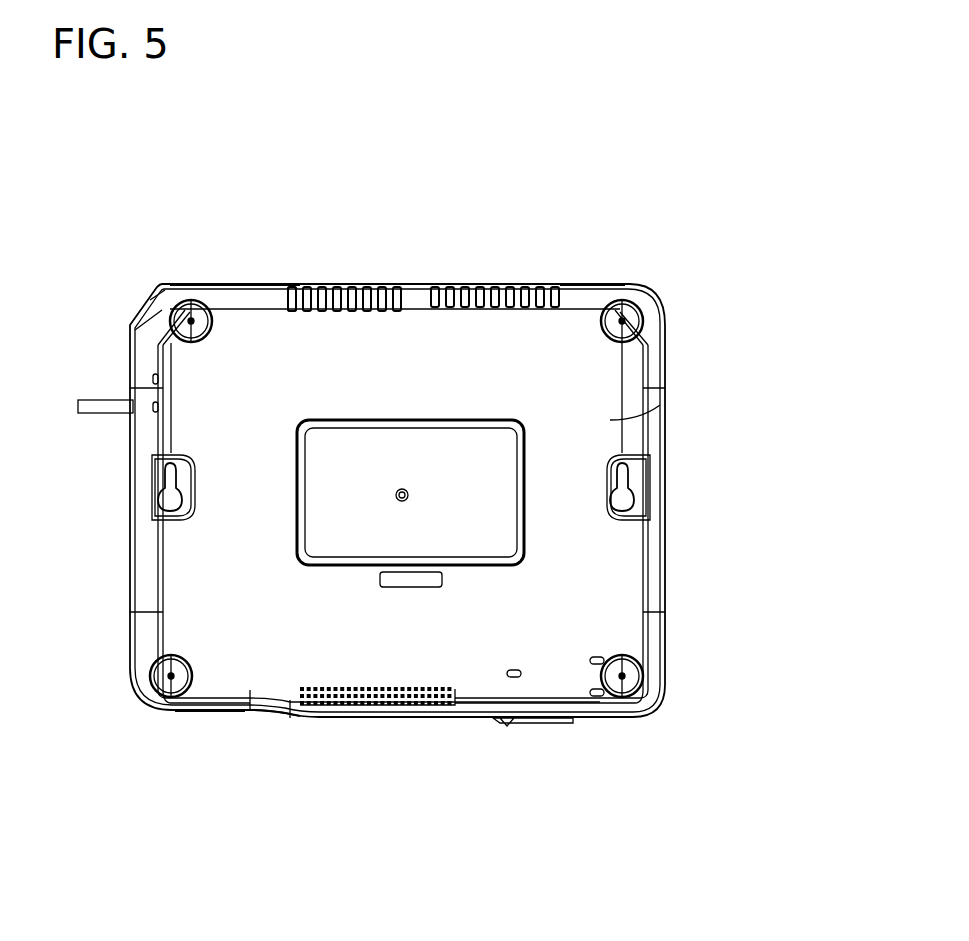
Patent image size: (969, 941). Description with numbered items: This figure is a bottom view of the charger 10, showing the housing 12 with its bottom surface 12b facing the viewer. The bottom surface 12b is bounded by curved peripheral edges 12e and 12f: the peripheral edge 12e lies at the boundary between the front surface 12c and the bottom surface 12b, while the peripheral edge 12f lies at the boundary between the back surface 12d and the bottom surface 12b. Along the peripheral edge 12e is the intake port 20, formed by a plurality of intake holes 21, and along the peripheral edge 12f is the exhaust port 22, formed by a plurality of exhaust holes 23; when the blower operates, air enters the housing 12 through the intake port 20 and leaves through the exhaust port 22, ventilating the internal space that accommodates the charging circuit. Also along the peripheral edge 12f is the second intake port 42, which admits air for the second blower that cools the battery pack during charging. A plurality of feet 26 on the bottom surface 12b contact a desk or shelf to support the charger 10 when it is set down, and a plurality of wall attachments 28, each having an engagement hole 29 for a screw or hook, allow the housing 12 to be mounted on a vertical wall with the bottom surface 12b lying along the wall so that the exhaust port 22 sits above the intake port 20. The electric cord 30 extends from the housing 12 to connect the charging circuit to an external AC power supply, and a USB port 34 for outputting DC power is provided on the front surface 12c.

The charger 10 is at (672, 200).
The housing 12 is at (668, 356).
The bottom surface 12b is at (640, 410).
The front surface 12c is at (210, 712).
The back surface 12d is at (200, 289).
The peripheral edge 12e is at (270, 704).
The peripheral edge 12f is at (592, 291).
The intake port 20 is at (455, 725).
The intake holes 21 is at (455, 705).
The exhaust port 22 is at (405, 275).
The exhaust holes 23 is at (288, 300).
The feet 26 is at (160, 292).
The wall attachments 28 is at (160, 465).
The engagement hole 29 is at (160, 498).
The electric cord 30 is at (105, 400).
The USB port 34 is at (545, 723).
The second intake port 42 is at (563, 275).